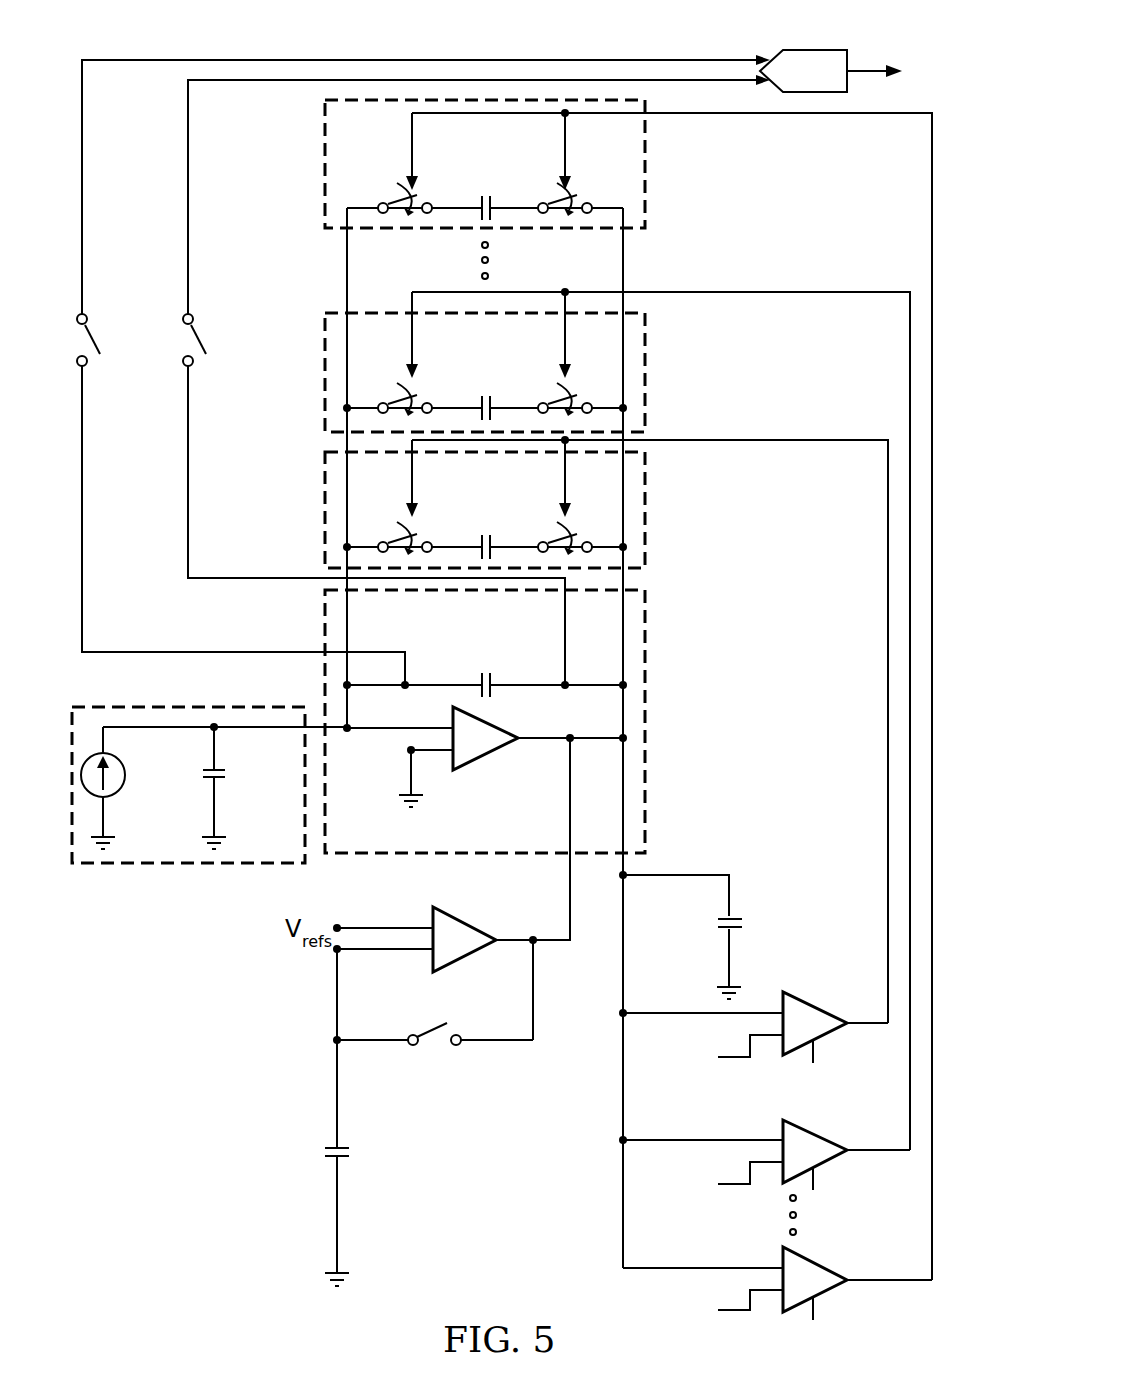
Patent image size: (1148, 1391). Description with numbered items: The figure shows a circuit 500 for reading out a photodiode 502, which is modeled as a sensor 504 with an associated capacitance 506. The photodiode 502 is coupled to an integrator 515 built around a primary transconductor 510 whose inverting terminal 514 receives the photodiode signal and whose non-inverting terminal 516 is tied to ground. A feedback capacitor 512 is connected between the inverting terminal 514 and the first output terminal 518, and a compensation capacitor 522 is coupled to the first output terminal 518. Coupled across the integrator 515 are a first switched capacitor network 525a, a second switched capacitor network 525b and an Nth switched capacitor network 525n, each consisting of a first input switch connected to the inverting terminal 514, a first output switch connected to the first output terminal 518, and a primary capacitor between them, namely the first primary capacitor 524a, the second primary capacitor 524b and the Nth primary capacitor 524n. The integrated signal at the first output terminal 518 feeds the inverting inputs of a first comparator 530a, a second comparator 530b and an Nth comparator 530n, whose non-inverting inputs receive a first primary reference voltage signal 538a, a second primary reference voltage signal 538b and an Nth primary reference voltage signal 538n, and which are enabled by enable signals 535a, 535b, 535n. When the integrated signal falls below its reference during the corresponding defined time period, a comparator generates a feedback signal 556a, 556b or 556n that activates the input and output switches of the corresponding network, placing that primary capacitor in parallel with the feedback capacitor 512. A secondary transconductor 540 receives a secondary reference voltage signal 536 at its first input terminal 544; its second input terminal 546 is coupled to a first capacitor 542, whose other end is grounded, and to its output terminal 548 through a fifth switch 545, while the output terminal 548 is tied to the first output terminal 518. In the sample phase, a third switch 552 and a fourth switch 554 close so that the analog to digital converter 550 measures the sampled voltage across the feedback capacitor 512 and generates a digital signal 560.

The circuit 500 is at (192, 1224).
The photodiode 502 is at (209, 815).
The sensor 504 is at (117, 792).
The capacitance Cs 506 is at (227, 775).
The primary transconductor 510 is at (487, 760).
The feedback capacitor CF 512 is at (484, 673).
The inverting terminal 514 is at (350, 732).
The integrator 515 is at (529, 765).
The non-inverting terminal 516 is at (413, 754).
The first output terminal 518 is at (573, 742).
The compensation capacitor Cc 522 is at (716, 924).
The first primary capacitor Cp1 524a is at (477, 507).
The second primary capacitor Cp2 524b is at (477, 369).
The Nth primary capacitor Cpn 524n is at (477, 168).
The first switched capacitor network 525a is at (537, 504).
The second switched capacitor network 525b is at (537, 362).
The Nth switched capacitor network 525n is at (537, 164).
The first comparator 530a is at (840, 992).
The second comparator 530b is at (840, 1119).
The Nth comparator 530n is at (840, 1247).
The enable signal EN 535a is at (816, 1045).
The enable signal EN 535b is at (816, 1172).
The enable signal EN 535n is at (816, 1302).
The secondary reference voltage signal Vrefs 536 is at (390, 925).
The first primary reference voltage signal Vrefp1 538a is at (733, 1062).
The second primary reference voltage signal Vrefp2 538b is at (733, 1189).
The Nth primary reference voltage signal Vrefpn 538n is at (733, 1316).
The secondary transconductor 540 is at (465, 960).
The first capacitor CA 542 is at (350, 1153).
The first input terminal 544 is at (332, 926).
The fifth switch S5 545 is at (430, 1025).
The second input terminal 546 is at (333, 953).
The output terminal 548 is at (530, 937).
The analog to digital converter (ADC) 550 is at (812, 48).
The third switch S3 552 is at (97, 333).
The fourth switch S4 554 is at (205, 333).
The feedback signal 556a is at (771, 439).
The feedback signal 556b is at (771, 291).
The feedback signal 556n is at (771, 116).
The digital signal 560 is at (866, 70).